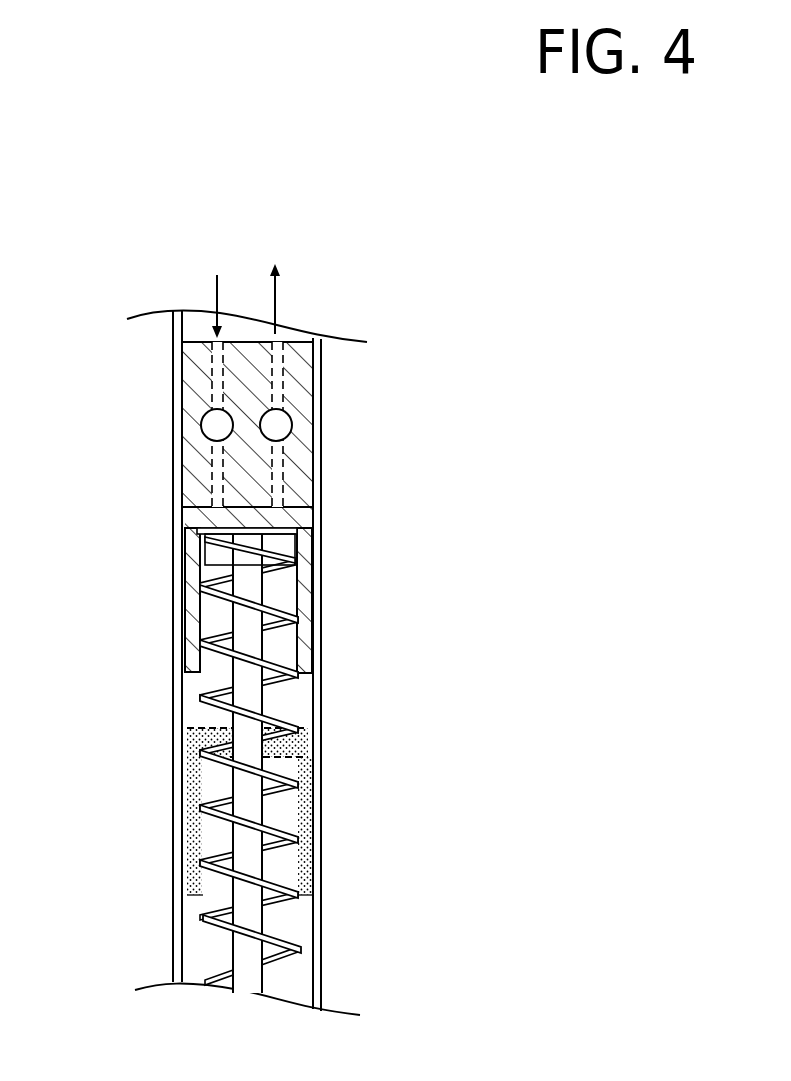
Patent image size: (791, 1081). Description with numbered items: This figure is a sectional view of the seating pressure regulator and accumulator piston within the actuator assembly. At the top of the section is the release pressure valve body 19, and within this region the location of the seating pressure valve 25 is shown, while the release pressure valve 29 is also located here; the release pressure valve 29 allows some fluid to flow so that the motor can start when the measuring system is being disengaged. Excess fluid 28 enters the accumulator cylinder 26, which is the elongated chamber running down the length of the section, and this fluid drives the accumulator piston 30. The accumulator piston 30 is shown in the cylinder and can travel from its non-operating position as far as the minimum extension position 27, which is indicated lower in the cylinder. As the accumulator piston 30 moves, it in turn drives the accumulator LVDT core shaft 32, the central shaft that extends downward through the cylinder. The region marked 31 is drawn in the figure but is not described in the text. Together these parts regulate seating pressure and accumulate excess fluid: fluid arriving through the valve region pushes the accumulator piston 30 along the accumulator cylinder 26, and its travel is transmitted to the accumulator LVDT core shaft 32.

The release pressure valve body 19 is at (174, 363).
The seating pressure valve 25 is at (208, 425).
The accumulator cylinder 26 is at (165, 575).
The minimum extension position 27 is at (172, 780).
The excess fluid 28 is at (213, 292).
The release pressure valve 29 is at (288, 429).
The accumulator piston 30 is at (323, 582).
The porous filter member 31 is at (320, 788).
The accumulator LVDT core shaft 32 is at (282, 923).